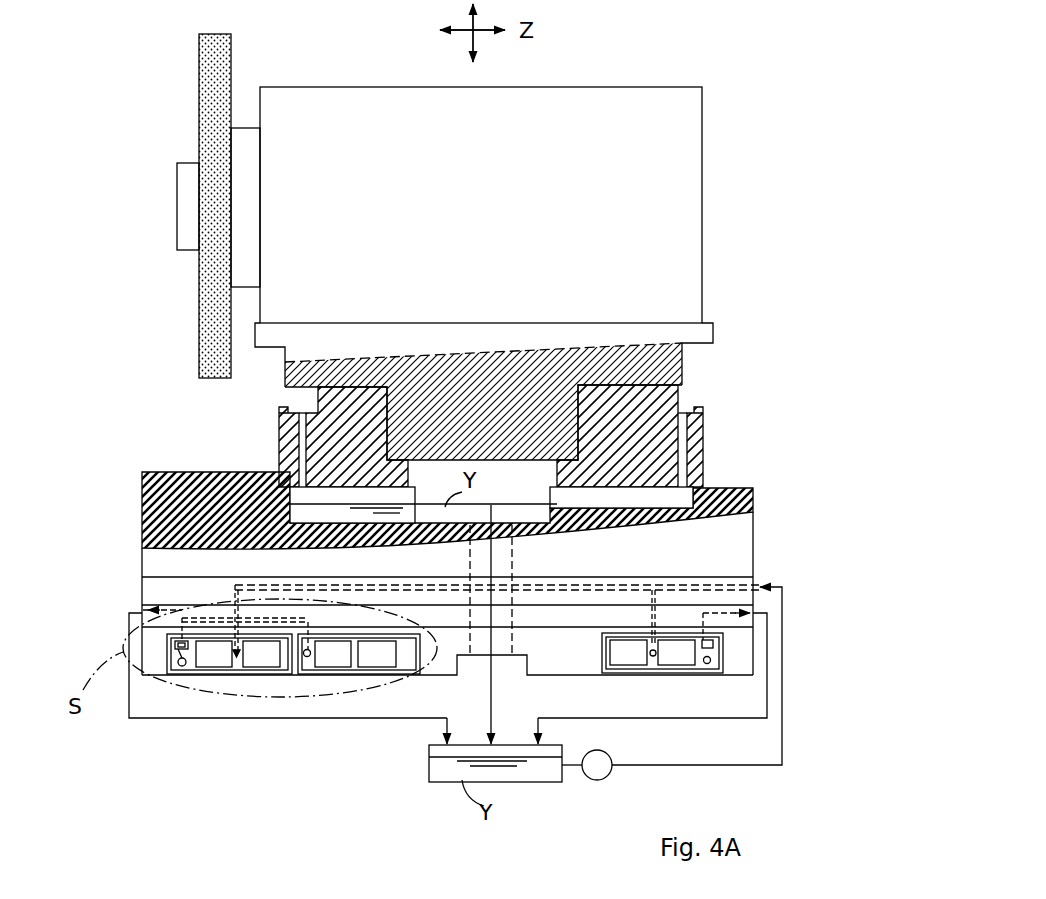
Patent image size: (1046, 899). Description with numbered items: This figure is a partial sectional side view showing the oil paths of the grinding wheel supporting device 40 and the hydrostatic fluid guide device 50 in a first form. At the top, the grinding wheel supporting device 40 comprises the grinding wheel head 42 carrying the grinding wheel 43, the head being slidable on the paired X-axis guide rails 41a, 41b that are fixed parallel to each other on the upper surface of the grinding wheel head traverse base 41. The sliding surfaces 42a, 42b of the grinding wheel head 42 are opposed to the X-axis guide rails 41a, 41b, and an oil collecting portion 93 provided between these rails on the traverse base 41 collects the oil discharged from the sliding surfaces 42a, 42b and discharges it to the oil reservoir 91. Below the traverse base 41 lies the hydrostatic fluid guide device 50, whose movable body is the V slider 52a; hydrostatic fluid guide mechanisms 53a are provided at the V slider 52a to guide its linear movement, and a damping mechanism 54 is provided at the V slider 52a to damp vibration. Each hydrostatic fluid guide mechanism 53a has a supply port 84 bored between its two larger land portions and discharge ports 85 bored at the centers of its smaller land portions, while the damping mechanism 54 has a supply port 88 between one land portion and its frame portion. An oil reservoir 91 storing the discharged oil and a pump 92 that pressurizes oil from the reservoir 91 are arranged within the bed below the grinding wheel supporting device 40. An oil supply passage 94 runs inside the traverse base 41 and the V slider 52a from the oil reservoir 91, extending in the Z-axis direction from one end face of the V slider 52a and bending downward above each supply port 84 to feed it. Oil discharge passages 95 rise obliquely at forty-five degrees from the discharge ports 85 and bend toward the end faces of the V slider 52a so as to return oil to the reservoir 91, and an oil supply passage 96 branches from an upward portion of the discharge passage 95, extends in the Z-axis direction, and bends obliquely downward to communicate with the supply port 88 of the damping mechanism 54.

The grinding wheel supporting device 40 is at (735, 205).
The grinding wheel head traverse base 41 is at (208, 483).
The X-axis guide rail for a grinding wheel head 41a is at (348, 398).
The X-axis guide rail for a grinding wheel head 41b is at (648, 398).
The grinding wheel head 42 is at (648, 328).
The sliding surface 42a is at (393, 385).
The sliding surface 42b is at (597, 385).
The grinding wheel 43 is at (222, 47).
The hydrostatic fluid guide device 50 is at (330, 776).
The V slider 52a is at (738, 652).
The hydrostatic fluid guide mechanism 53a is at (268, 688).
The damping mechanism 54 is at (350, 688).
The supply port 84 is at (237, 660).
The discharge port 85 is at (184, 666).
The supply port 88 is at (308, 657).
The oil reservoir 91 is at (429, 760).
The pump 92 is at (610, 772).
The oil collecting portion 93 is at (525, 491).
The oil supply passage 94 is at (257, 587).
The oil discharge passage 95 is at (143, 612).
The oil supply passage 96 is at (227, 617).